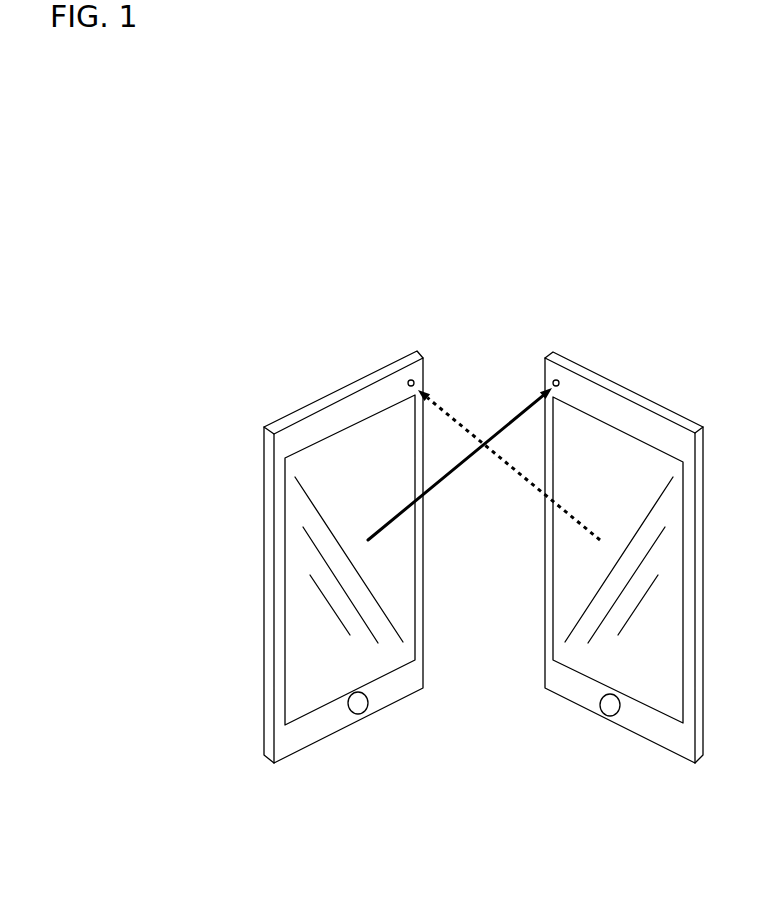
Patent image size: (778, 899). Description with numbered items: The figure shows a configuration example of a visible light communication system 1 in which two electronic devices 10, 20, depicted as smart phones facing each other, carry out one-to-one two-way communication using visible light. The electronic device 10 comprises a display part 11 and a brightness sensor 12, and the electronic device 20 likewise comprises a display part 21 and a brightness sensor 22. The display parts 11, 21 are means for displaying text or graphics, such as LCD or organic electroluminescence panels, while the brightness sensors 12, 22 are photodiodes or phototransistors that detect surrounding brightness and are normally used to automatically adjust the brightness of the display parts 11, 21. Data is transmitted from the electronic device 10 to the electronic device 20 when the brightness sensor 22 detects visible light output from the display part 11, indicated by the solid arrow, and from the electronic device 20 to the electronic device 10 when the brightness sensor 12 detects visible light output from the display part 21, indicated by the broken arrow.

The visible light communication system 1 is at (175, 297).
The electronic device 10 is at (345, 393).
The display part 11 is at (332, 458).
The brightness sensor 12 is at (411, 380).
The electronic device 20 is at (627, 393).
The display part 21 is at (637, 458).
The brightness sensor 22 is at (556, 380).